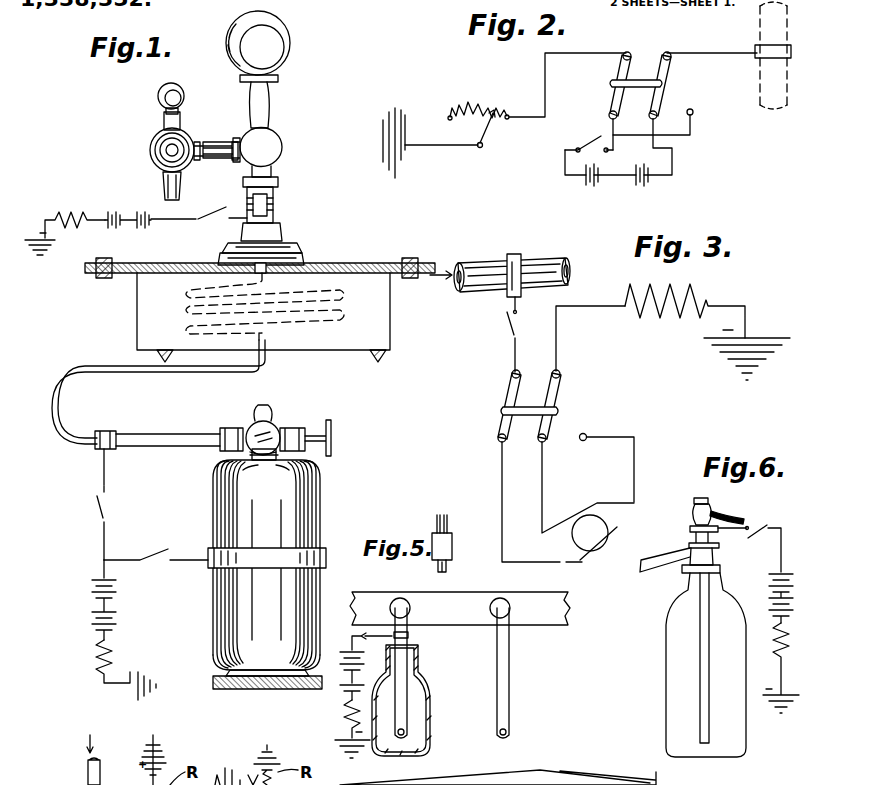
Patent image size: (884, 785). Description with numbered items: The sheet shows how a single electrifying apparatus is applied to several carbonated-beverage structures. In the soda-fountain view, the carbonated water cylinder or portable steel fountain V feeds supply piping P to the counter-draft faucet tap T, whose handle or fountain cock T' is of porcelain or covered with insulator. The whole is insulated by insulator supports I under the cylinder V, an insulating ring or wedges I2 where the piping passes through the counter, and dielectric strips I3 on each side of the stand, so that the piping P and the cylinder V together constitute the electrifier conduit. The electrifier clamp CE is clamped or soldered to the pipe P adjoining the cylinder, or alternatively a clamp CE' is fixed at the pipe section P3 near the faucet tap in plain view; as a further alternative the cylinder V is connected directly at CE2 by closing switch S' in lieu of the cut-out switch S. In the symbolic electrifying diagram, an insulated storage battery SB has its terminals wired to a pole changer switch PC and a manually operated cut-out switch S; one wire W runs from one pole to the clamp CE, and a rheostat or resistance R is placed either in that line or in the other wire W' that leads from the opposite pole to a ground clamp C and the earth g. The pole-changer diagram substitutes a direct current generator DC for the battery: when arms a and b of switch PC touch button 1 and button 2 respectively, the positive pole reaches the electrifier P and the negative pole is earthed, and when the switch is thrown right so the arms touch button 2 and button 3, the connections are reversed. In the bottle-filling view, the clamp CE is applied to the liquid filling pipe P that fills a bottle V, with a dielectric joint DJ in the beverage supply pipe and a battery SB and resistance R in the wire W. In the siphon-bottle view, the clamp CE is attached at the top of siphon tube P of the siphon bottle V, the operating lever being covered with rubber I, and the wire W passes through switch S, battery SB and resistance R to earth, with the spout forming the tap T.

In FIG. 1, the pipe section near faucet tap P3 is at (282, 190).
In FIG. 1, the electrifier clamp CE' is at (275, 226).
In FIG. 1, the carbonated water cylinder V is at (126, 262).
In FIG. 5, the carbonated water cylinder V is at (430, 732).
In FIG. 6, the carbonated water cylinder V is at (732, 740).
In FIG. 1, the dielectric strips I3 is at (414, 246).
In FIG. 1, the button 2 is at (263, 311).
In FIG. 3, the button 2 is at (555, 432).
In FIG. 1, the insulating ring or wedges I2 is at (250, 284).
In FIG. 1, the insulator supports I is at (163, 362).
In FIG. 6, the insulator supports I is at (726, 512).
In FIG. 1, the supply piping P is at (122, 370).
In FIG. 2, the supply piping P is at (762, 96).
In FIG. 3, the supply piping P is at (484, 292).
In FIG. 5, the supply piping P is at (405, 690).
In FIG. 6, the supply piping P is at (702, 672).
In FIG. 1, the electrifier clamp CE is at (213, 425).
In FIG. 2, the electrifier clamp CE is at (755, 67).
In FIG. 3, the electrifier clamp CE is at (531, 263).
In FIG. 5, the electrifier clamp CE is at (427, 642).
In FIG. 6, the electrifier clamp CE is at (684, 549).
In FIG. 1, the direct cylinder connection CE2 is at (322, 550).
In FIG. 1, the wire W is at (120, 467).
In FIG. 2, the wire W is at (712, 63).
In FIG. 3, the wire W is at (528, 305).
In FIG. 5, the wire W is at (363, 636).
In FIG. 6, the wire W is at (733, 539).
In FIG. 1, the wire W' is at (90, 472).
In FIG. 2, the wire W' is at (582, 66).
In FIG. 3, the wire W' is at (590, 338).
In FIG. 1, the cut-out switch S is at (172, 369).
In FIG. 2, the cut-out switch S is at (629, 130).
In FIG. 3, the cut-out switch S is at (498, 342).
In FIG. 6, the cut-out switch S is at (764, 548).
In FIG. 1, the switch S' is at (156, 545).
In FIG. 1, the storage battery SB is at (100, 600).
In FIG. 2, the storage battery SB is at (614, 178).
In FIG. 5, the storage battery SB is at (345, 685).
In FIG. 6, the storage battery SB is at (770, 587).
In FIG. 1, the resistance R is at (98, 655).
In FIG. 2, the resistance R is at (482, 96).
In FIG. 3, the resistance R is at (644, 316).
In FIG. 5, the resistance R is at (346, 726).
In FIG. 6, the resistance R is at (774, 652).
In FIG. 1, the faucet tap T is at (183, 156).
In FIG. 6, the faucet tap T is at (665, 575).
In FIG. 1, the fountain cock T' is at (185, 92).
In FIG. 2, the condenser C is at (406, 135).
In FIG. 2, the ground g is at (441, 90).
In FIG. 3, the ground g is at (669, 511).
In FIG. 2, the pole changer switch PC is at (644, 66).
In FIG. 3, the pole changer switch PC is at (504, 396).
In FIG. 3, the switch arm a is at (498, 426).
In FIG. 3, the switch arm b is at (541, 430).
In FIG. 3, the button 1 is at (510, 432).
In FIG. 3, the button 3 is at (607, 456).
In FIG. 3, the direct current generator DC is at (609, 518).
In FIG. 5, the dielectric joint DJ is at (431, 546).